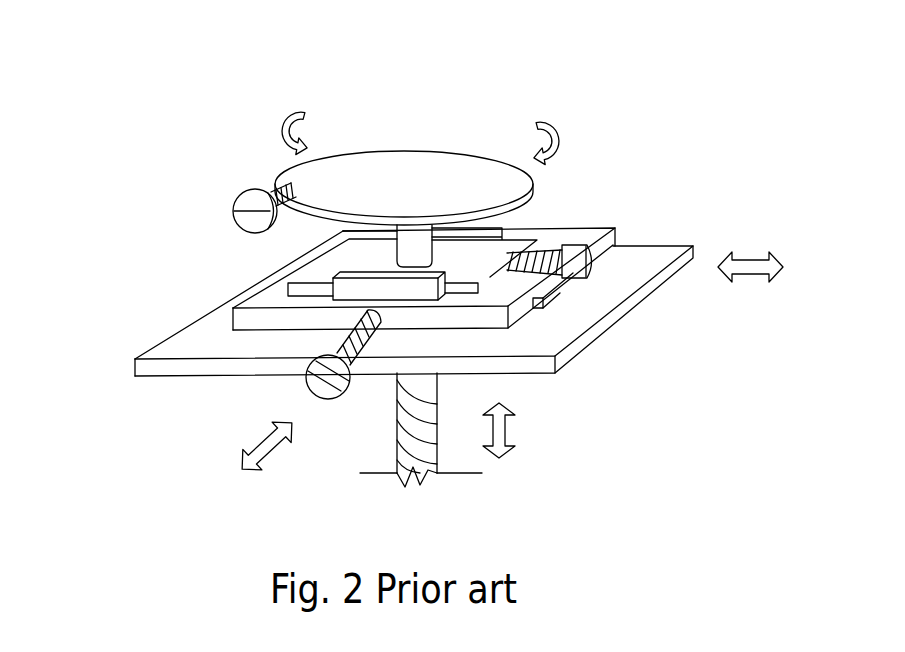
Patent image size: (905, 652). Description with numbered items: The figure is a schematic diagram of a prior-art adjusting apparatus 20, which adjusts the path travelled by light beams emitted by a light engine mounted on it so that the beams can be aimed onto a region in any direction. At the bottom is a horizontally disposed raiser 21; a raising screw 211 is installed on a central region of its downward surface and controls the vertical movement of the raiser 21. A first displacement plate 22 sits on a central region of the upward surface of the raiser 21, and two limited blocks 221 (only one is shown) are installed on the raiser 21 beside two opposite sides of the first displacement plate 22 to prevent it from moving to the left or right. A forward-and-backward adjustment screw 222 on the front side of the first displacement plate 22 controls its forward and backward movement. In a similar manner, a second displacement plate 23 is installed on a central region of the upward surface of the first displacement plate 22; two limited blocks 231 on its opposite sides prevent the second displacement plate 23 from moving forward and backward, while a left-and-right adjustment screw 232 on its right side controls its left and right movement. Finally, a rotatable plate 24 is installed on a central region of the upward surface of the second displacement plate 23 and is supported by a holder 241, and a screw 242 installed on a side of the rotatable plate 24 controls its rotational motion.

The adjusting apparatus 20 is at (622, 73).
The raiser 21 is at (653, 258).
The raising screw 211 is at (397, 434).
The first displacement plate 22 is at (560, 240).
The limited blocks 221 is at (548, 300).
The forward-and-backward adjustment screw 222 is at (305, 386).
The second displacement plate 23 is at (327, 268).
The limited blocks 231 is at (333, 300).
The left-and-right adjustment screw 232 is at (573, 263).
The rotatable plate 24 is at (405, 167).
The holder 241 is at (413, 243).
The screw 242 is at (248, 204).